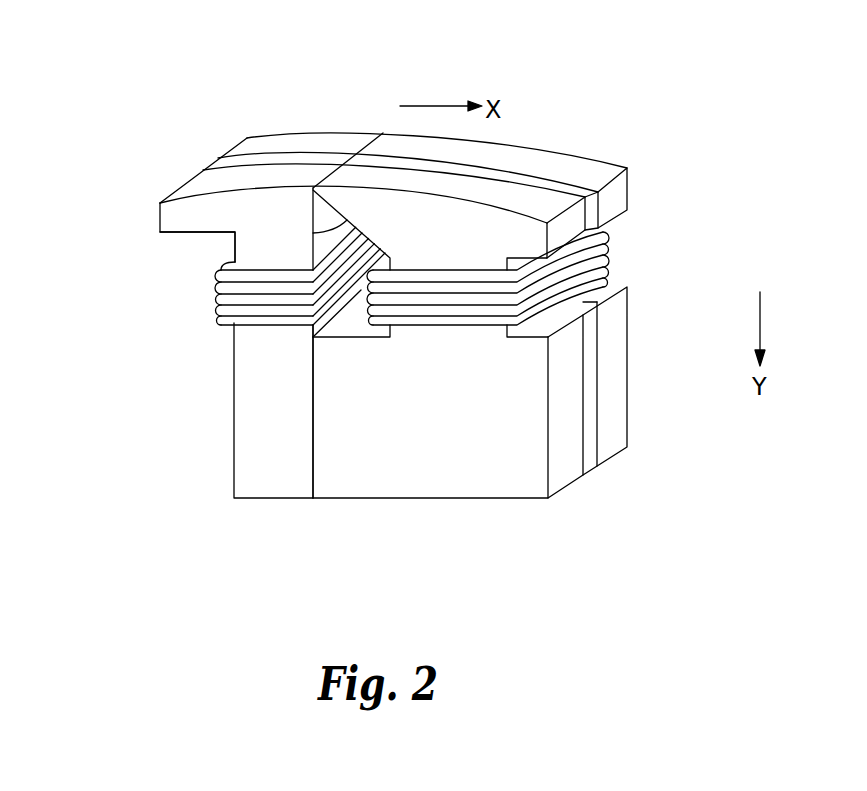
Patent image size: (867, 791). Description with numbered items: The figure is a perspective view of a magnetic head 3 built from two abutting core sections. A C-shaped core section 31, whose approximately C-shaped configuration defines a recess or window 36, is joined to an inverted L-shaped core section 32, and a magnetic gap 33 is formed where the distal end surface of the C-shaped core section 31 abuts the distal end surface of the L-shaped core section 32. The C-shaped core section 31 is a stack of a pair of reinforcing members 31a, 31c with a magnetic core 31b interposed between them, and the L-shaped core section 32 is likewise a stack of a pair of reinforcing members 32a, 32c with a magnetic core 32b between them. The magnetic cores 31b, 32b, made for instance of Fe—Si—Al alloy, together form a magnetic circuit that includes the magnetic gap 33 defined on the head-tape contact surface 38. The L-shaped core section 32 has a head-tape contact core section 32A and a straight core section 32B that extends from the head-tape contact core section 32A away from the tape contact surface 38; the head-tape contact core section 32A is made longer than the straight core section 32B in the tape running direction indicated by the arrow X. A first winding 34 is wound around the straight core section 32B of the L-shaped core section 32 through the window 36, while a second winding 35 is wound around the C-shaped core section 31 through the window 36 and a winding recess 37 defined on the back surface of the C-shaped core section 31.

The magnetic head 3 is at (508, 61).
The C-shaped core section 31 is at (440, 475).
The reinforcing member 31a is at (564, 475).
The magnetic core 31b is at (590, 462).
The reinforcing member 31c is at (613, 433).
The L-shaped core section 32 is at (260, 477).
The reinforcing member 32a is at (193, 187).
The magnetic core 32b is at (222, 162).
The reinforcing member 32c is at (268, 140).
The head-tape contact core section 32A is at (203, 217).
The straight core section 32B is at (235, 397).
The magnetic gap 33 is at (360, 147).
The first winding 34 is at (222, 323).
The second winding 35 is at (607, 234).
The window 36 is at (347, 327).
The winding recess 37 is at (620, 276).
The head-tape contact surface 38 is at (575, 168).